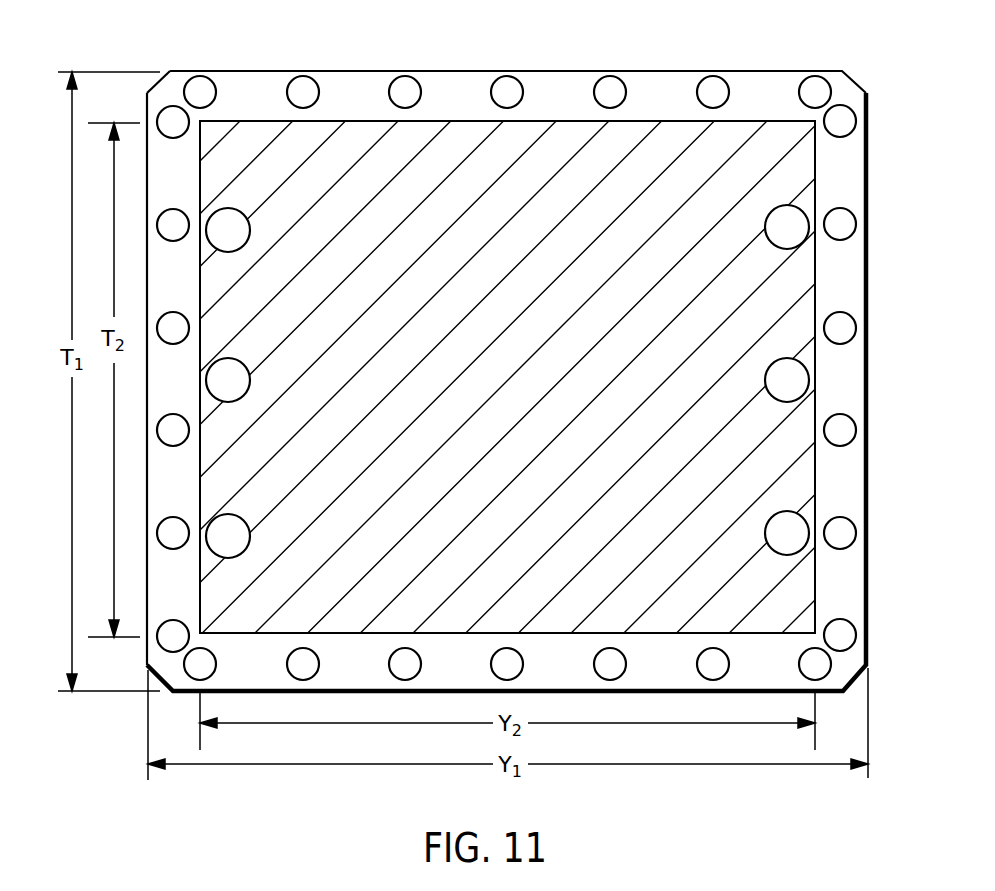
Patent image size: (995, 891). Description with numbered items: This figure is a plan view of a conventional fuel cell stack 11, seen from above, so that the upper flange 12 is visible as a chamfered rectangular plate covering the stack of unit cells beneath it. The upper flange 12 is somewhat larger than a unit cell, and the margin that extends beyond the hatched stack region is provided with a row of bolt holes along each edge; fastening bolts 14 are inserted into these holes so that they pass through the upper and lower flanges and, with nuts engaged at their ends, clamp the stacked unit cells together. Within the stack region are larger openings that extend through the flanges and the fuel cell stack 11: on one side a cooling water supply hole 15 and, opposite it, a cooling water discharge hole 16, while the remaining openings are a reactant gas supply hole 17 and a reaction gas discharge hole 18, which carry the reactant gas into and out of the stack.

The fuel cell stack 11 is at (878, 308).
The upper flange 12 is at (851, 147).
The fastening bolts 14 is at (716, 96).
The cooling water supply hole 15 is at (792, 383).
The cooling water discharge hole 16 is at (218, 383).
The reactant gas supply hole 17 is at (790, 231).
The reaction gas discharge hole 18 is at (214, 233).